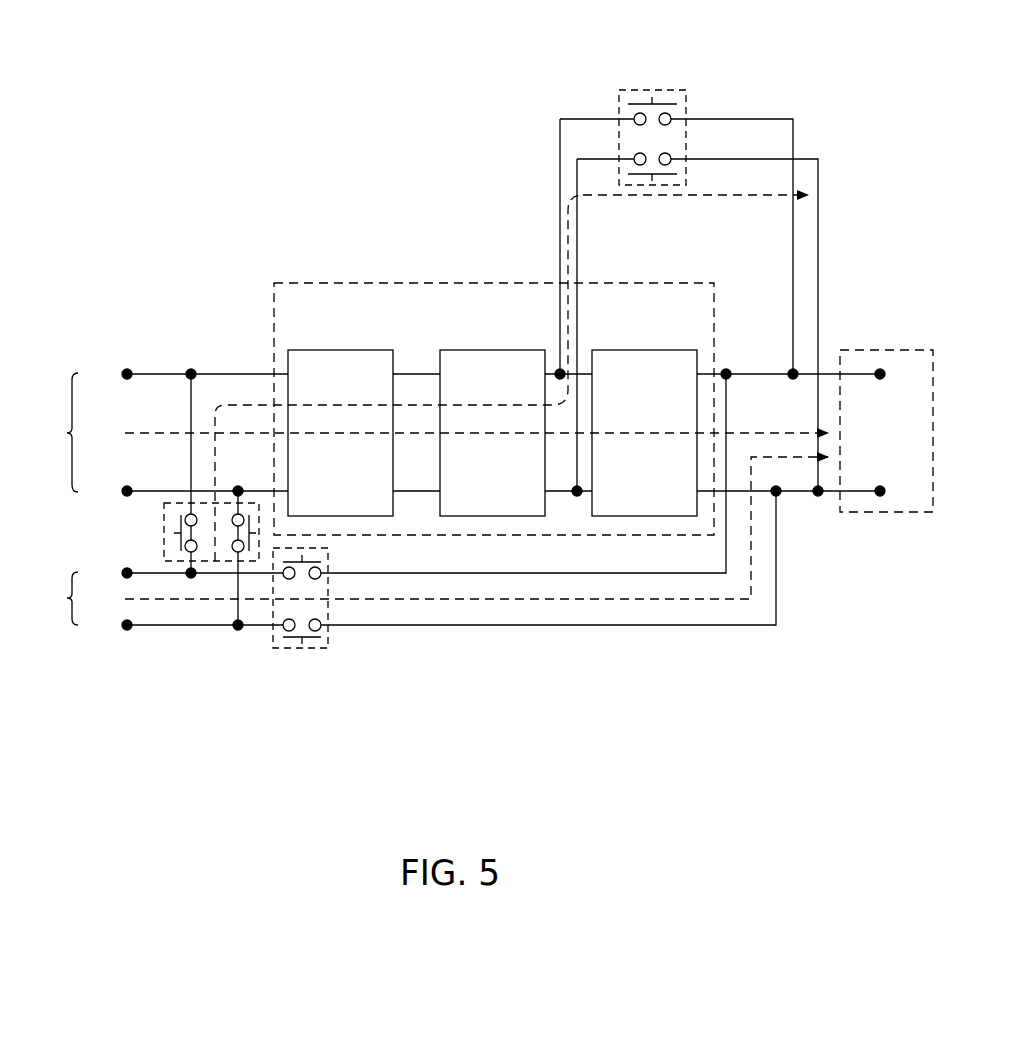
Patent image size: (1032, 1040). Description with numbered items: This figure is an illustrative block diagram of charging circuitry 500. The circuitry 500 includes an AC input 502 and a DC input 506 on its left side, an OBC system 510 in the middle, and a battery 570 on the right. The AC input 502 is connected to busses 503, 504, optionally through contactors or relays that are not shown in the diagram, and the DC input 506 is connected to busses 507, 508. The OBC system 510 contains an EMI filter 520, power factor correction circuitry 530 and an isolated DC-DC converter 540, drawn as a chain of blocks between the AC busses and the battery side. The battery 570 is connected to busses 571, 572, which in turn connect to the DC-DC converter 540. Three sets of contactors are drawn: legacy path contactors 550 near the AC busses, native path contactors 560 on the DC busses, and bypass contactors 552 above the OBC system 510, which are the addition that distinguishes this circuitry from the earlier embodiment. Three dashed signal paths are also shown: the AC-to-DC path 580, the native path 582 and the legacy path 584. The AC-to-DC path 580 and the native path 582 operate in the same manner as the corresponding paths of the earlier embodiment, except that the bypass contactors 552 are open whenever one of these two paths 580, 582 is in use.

The circuitry 500 is at (117, 117).
The AC input 502 is at (423, 432).
The bus 503 is at (153, 374).
The bus 504 is at (153, 491).
The DC input 506 is at (64, 598).
The bus 507 is at (148, 573).
The bus 508 is at (207, 625).
The OBC system 510 is at (494, 283).
The EMI filter 520 is at (340, 350).
The power factor correction circuitry 530 is at (493, 350).
The isolated DC-DC converter 540 is at (645, 350).
The legacy path contactors 550 is at (164, 522).
The bypass contactors 552 is at (652, 90).
The native path contactors 560 is at (310, 648).
The battery 570 is at (888, 350).
The bus 571 is at (760, 373).
The bus 572 is at (797, 495).
The AC-to-DC path 580 is at (410, 432).
The native path 582 is at (683, 600).
The legacy path 584 is at (752, 197).